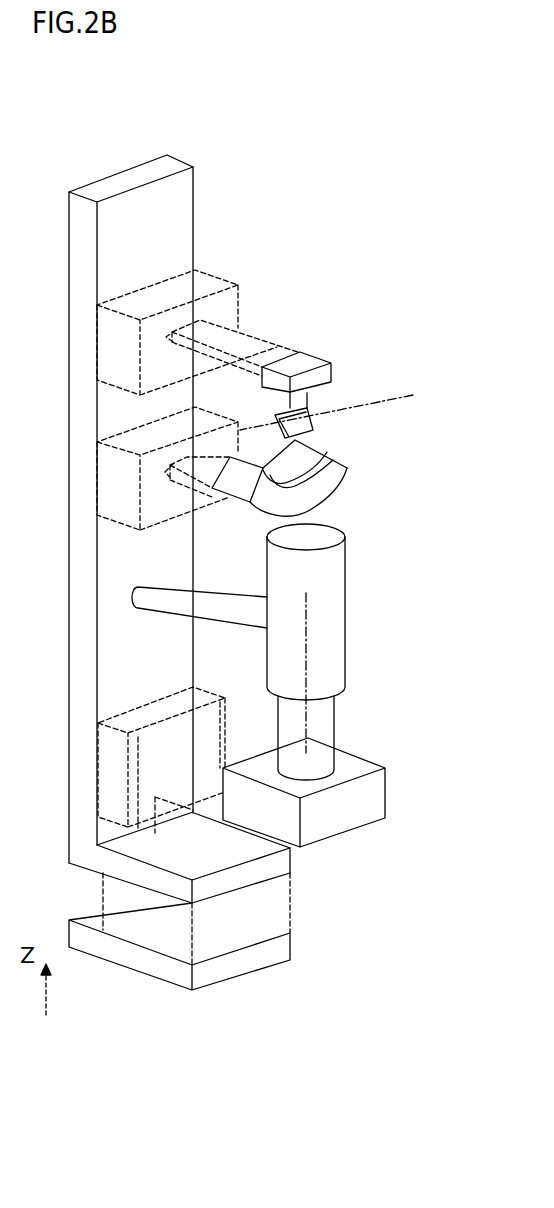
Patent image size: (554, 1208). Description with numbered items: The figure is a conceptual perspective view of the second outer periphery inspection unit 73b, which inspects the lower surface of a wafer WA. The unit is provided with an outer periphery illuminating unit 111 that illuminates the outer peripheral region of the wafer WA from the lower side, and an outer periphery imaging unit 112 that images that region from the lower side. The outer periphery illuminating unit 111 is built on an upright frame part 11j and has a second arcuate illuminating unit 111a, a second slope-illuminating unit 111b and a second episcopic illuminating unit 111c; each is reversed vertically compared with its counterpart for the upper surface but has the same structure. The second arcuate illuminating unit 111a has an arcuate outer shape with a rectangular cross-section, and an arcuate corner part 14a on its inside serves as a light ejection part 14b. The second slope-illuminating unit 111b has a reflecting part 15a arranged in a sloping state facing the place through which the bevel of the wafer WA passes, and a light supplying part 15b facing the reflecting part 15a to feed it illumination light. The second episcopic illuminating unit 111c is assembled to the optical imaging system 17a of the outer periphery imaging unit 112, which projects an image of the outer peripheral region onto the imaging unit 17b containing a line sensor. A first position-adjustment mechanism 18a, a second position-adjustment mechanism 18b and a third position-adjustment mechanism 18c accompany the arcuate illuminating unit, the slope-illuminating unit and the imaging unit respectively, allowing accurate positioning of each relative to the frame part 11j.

The second outer periphery inspection unit 73b is at (205, 132).
The frame part 11j is at (177, 233).
The second position-adjustment mechanism 18b is at (113, 300).
The first position-adjustment mechanism 18a is at (115, 428).
The third position-adjustment mechanism 18c is at (113, 717).
The outer periphery illuminating unit 111 is at (352, 328).
The second arcuate illuminating unit 111a is at (243, 473).
The second slope-illuminating unit 111b is at (337, 338).
The second episcopic illuminating unit 111c is at (218, 607).
The light supplying part 15b is at (302, 365).
The reflecting part 15a is at (307, 427).
The wafer WA is at (413, 395).
The arcuate corner part 14a is at (340, 488).
The light ejection part 14b is at (331, 489).
The outer periphery imaging unit 112 is at (383, 528).
The optical imaging system 17a is at (277, 583).
The imaging unit 17b is at (340, 827).